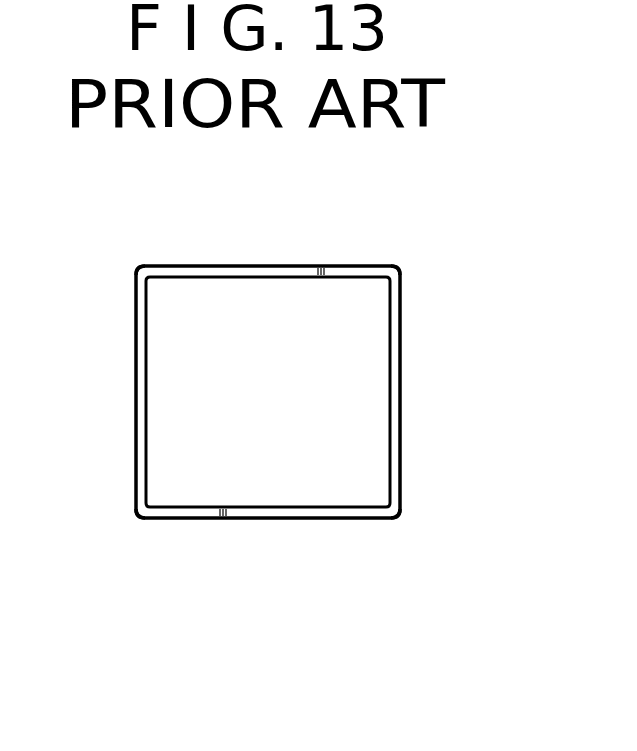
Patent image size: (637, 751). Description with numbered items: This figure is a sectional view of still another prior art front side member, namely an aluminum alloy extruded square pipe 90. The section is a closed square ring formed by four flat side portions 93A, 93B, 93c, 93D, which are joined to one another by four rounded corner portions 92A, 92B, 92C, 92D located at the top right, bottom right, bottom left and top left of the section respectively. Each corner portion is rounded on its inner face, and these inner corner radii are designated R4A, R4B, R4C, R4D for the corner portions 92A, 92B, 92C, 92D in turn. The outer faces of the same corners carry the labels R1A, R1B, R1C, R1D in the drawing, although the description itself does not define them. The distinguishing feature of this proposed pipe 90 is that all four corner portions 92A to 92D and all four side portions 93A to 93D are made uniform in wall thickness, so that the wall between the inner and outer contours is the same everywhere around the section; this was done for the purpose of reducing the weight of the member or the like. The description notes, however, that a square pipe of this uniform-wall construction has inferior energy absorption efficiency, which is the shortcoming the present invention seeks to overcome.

The Al alloy extruded square pipe 90 is at (332, 240).
The corner portion 92A is at (407, 275).
The corner portion 92B is at (392, 522).
The corner portion 92C is at (133, 522).
The corner portion 92D is at (143, 262).
The side portion 93A is at (400, 408).
The side portion 93B is at (277, 520).
The side portion 93c is at (138, 410).
The side portion 93D is at (247, 266).
The outer corner radius R1A is at (393, 268).
The outer corner radius R1B is at (398, 507).
The outer corner radius R1C is at (143, 520).
The outer corner radius R1D is at (132, 278).
The radius of corner portion R4A is at (385, 279).
The radius of corner portion R4B is at (388, 503).
The radius of corner portion R4C is at (148, 505).
The radius of corner portion R4D is at (148, 281).